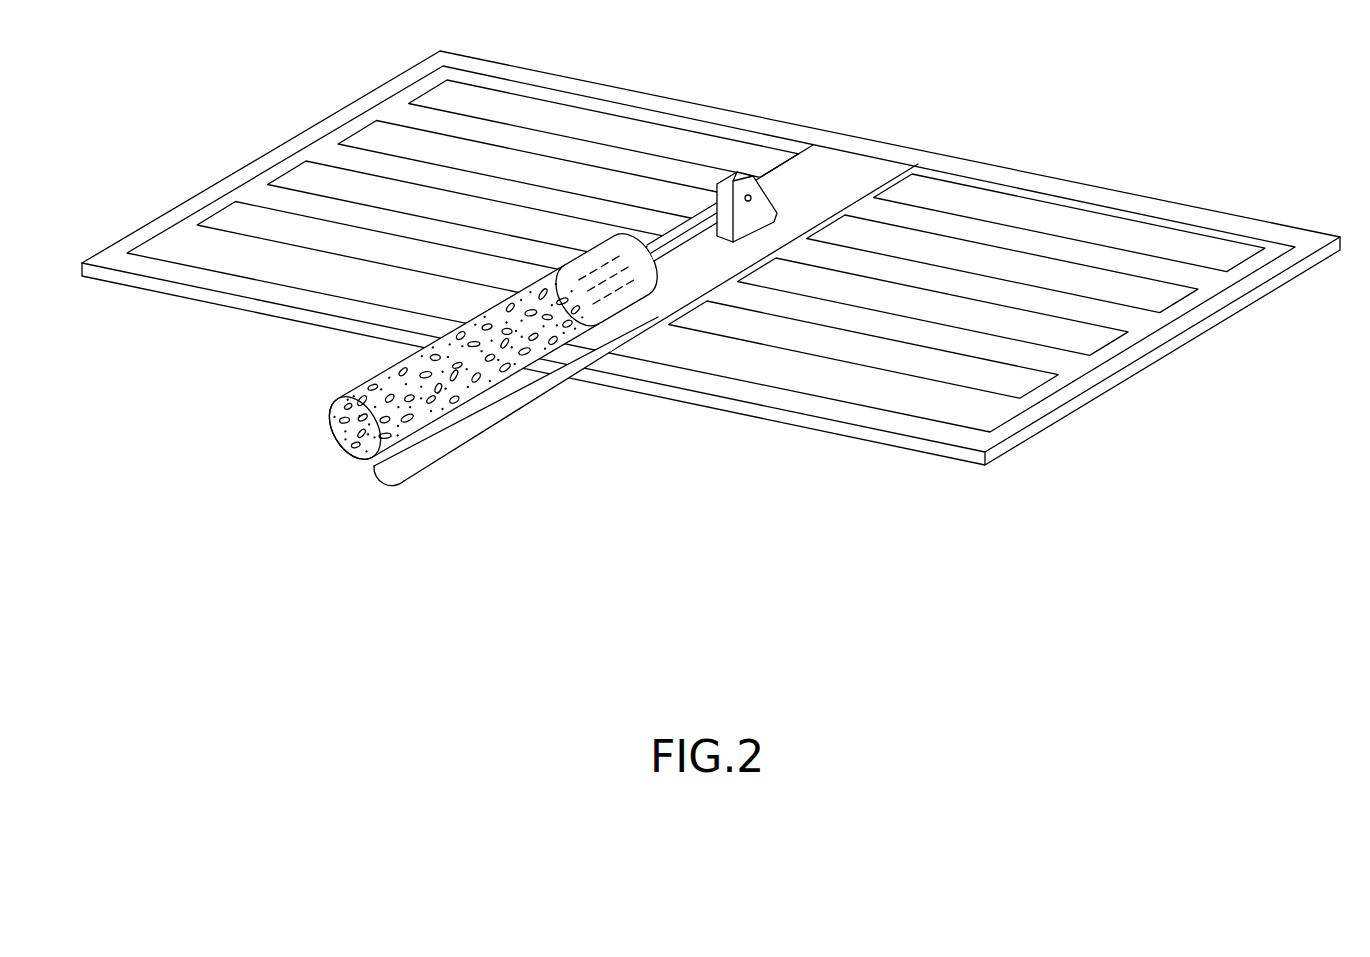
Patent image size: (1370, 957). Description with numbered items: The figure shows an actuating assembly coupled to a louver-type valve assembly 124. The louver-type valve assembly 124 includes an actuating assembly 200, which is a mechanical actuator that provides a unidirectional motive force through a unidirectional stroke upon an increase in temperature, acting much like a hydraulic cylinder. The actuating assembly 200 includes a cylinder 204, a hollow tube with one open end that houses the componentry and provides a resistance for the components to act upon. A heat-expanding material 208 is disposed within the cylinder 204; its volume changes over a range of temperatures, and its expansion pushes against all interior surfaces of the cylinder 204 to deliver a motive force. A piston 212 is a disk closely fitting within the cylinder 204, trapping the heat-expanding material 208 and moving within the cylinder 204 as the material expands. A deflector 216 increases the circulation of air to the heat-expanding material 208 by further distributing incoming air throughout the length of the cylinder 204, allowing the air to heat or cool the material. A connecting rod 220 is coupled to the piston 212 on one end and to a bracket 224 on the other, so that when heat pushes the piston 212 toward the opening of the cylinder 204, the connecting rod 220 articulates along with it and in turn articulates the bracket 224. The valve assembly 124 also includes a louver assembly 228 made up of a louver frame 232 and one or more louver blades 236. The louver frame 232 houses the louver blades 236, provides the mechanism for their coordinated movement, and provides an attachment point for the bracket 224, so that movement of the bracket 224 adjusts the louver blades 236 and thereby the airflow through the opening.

The louver-type valve assembly 124 is at (1353, 257).
The actuating assembly 200 is at (516, 415).
The cylinder 204 is at (379, 397).
The heat-expanding material 208 is at (430, 322).
The piston 212 is at (595, 286).
The deflector 216 is at (394, 467).
The connecting rod 220 is at (688, 222).
The bracket 224 is at (749, 182).
The louver assembly 228 is at (853, 172).
The louver frame 232 is at (1167, 210).
The louver blades 236 is at (1033, 245).